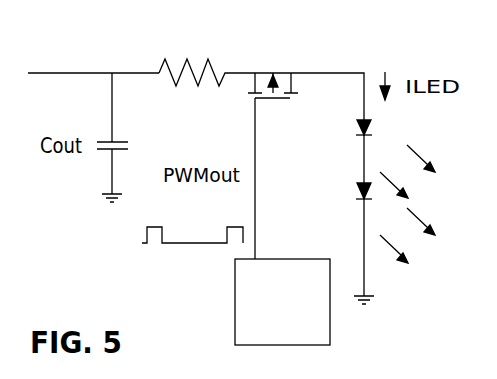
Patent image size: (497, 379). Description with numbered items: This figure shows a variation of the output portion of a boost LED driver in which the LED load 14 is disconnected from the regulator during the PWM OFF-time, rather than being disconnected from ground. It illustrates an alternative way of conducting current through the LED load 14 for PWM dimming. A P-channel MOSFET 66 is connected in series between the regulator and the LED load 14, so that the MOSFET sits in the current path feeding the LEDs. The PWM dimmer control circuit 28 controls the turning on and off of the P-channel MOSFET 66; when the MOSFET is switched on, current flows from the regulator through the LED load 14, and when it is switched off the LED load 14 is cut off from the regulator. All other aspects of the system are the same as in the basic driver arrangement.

The P-channel MOSFET 66 is at (275, 62).
The LED load 14 is at (343, 157).
The PWM dimmer control circuit 28 is at (330, 330).